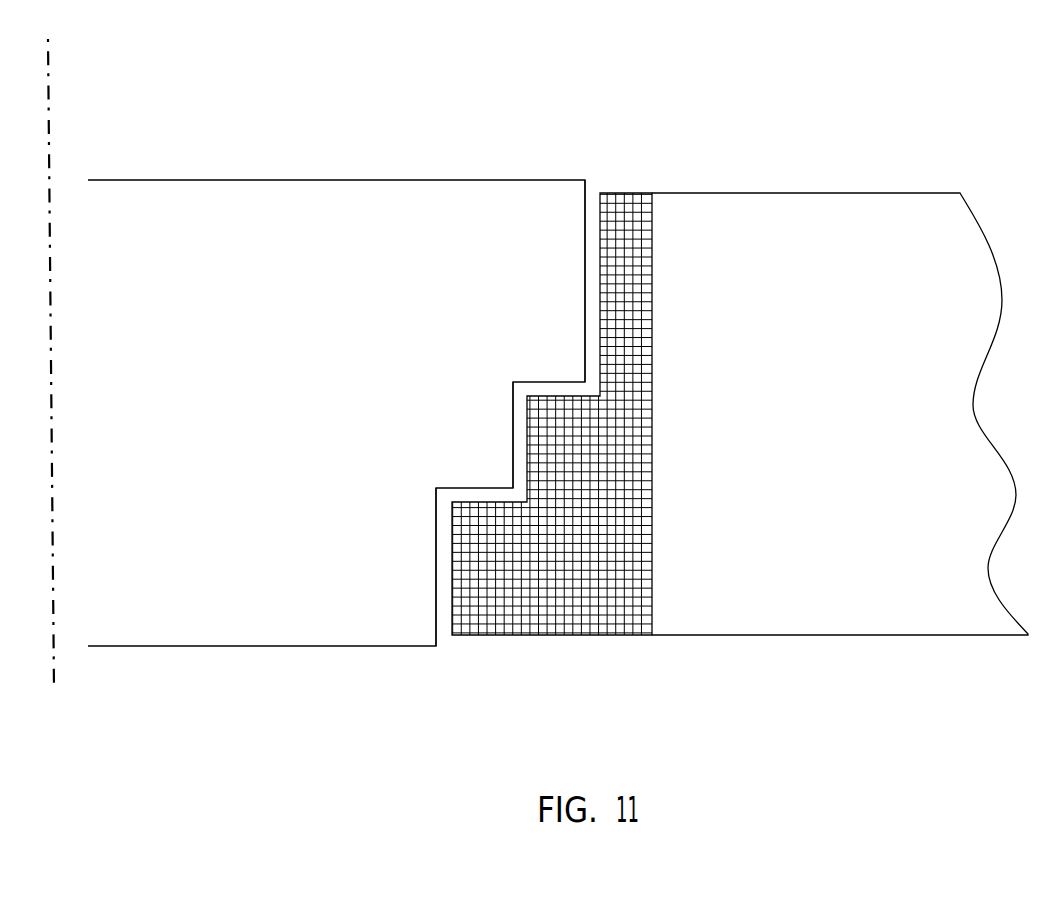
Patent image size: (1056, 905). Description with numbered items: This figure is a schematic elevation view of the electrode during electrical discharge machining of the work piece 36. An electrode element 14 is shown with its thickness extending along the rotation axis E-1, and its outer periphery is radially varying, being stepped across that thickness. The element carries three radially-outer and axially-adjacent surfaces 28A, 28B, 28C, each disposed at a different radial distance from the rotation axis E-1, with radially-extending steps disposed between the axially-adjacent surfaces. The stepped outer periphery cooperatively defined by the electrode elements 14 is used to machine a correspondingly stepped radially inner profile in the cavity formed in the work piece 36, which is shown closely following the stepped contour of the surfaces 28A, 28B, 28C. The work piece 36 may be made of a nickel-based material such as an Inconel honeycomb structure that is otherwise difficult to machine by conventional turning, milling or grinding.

The rotation axis E-1 is at (48, 97).
The electrode element 14 is at (246, 321).
The radially-outer surface 28A is at (583, 207).
The radially-outer surface 28B is at (512, 449).
The radially-outer surface 28C is at (436, 608).
The work piece 36 is at (622, 203).